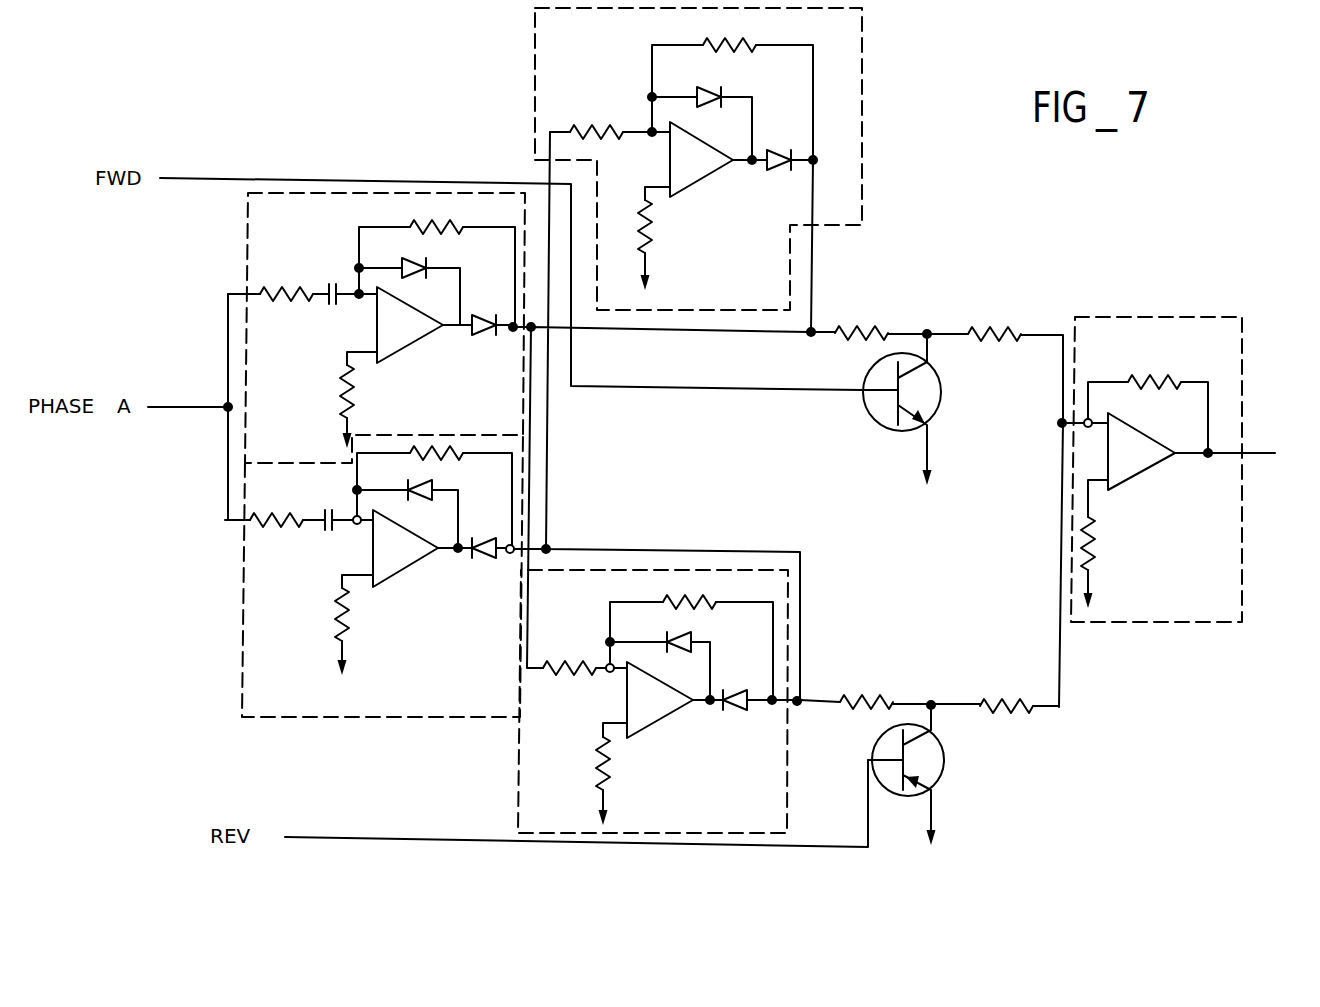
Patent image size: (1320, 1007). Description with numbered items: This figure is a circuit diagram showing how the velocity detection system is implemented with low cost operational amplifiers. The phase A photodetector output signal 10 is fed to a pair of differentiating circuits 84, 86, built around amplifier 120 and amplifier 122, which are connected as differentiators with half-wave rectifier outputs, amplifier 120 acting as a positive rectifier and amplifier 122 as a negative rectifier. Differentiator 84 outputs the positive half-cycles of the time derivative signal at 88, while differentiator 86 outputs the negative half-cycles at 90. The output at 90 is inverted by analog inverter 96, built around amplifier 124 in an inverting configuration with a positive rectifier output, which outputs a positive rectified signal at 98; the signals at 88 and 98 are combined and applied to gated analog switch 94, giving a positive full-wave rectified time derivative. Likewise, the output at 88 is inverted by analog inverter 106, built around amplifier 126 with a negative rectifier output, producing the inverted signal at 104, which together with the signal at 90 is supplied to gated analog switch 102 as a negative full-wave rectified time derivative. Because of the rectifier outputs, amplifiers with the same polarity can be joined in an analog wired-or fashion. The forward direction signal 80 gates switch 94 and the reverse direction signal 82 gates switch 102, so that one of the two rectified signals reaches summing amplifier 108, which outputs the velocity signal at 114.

The phase A photodetector output signal 10 is at (176, 409).
The forward direction signal 80 is at (219, 177).
The reverse direction signal 82 is at (346, 838).
The differentiating circuit 84 is at (248, 224).
The differentiating circuit 86 is at (242, 683).
The output of differentiator 84 88 is at (511, 333).
The output of differentiator 86 90 is at (508, 554).
The gated analog switch 94 is at (868, 420).
The analog inverter 96 is at (862, 195).
The inverted signal output 98 is at (813, 281).
The gated analog switch 102 is at (945, 775).
The inverted signal output 104 is at (790, 706).
The analog inverter 106 is at (680, 568).
The summing amplifier 108 is at (1137, 623).
The velocity signal output 114 is at (1262, 460).
The amplifier 120 is at (407, 350).
The amplifier 122 is at (402, 568).
The amplifier 124 is at (700, 182).
The amplifier 126 is at (660, 718).